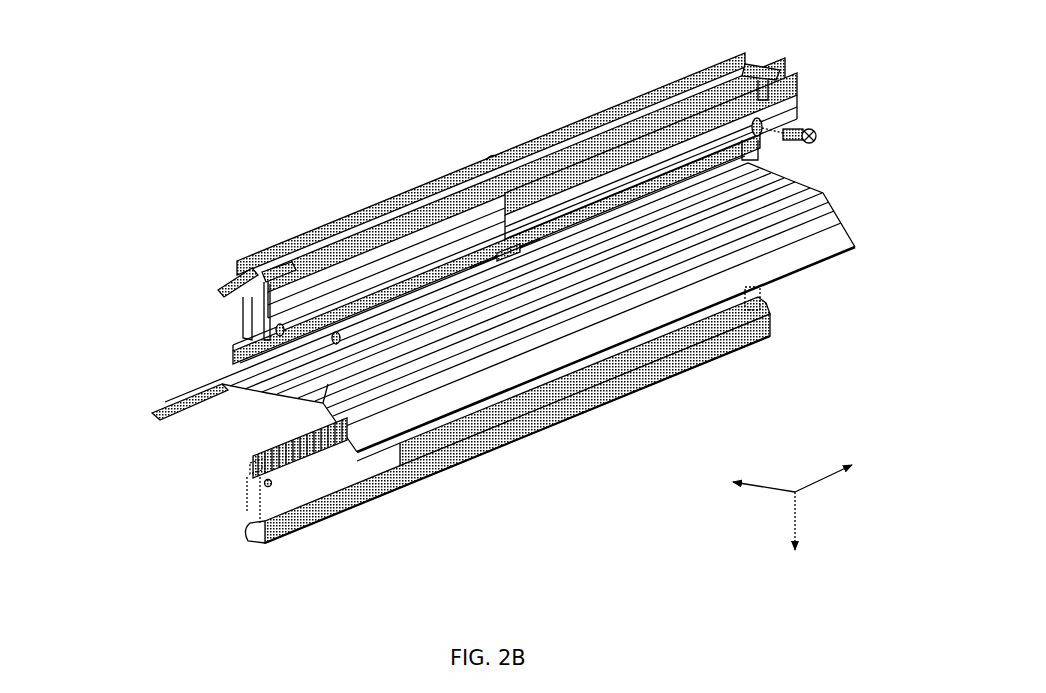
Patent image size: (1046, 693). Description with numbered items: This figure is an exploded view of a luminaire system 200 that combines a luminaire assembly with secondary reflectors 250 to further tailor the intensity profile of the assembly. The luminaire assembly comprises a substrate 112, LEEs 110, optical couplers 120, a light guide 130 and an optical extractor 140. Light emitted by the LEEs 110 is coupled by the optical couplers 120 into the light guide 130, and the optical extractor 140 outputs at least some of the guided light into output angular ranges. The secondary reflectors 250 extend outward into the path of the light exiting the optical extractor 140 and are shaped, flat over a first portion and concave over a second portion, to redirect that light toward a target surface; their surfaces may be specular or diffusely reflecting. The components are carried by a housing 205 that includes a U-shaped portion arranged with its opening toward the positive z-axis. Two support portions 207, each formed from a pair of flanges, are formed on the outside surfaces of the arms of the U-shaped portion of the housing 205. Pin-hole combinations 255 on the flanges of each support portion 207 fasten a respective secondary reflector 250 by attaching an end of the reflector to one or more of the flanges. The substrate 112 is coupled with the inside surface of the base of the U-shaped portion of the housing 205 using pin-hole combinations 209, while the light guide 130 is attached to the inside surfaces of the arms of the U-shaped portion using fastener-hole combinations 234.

The luminaire system 200 is at (162, 75).
The housing 205 is at (637, 105).
The support portions 207 is at (247, 262).
The fastener-hole combinations 234 is at (765, 130).
The pin-hole combinations 255 is at (452, 327).
The pin-hole combinations 209 is at (497, 252).
The substrate 112 is at (566, 345).
The secondary reflectors 250 is at (753, 270).
The LEEs 110 is at (262, 451).
The optical couplers 120 is at (257, 465).
The light guide 130 is at (517, 431).
The optical extractor 140 is at (260, 527).